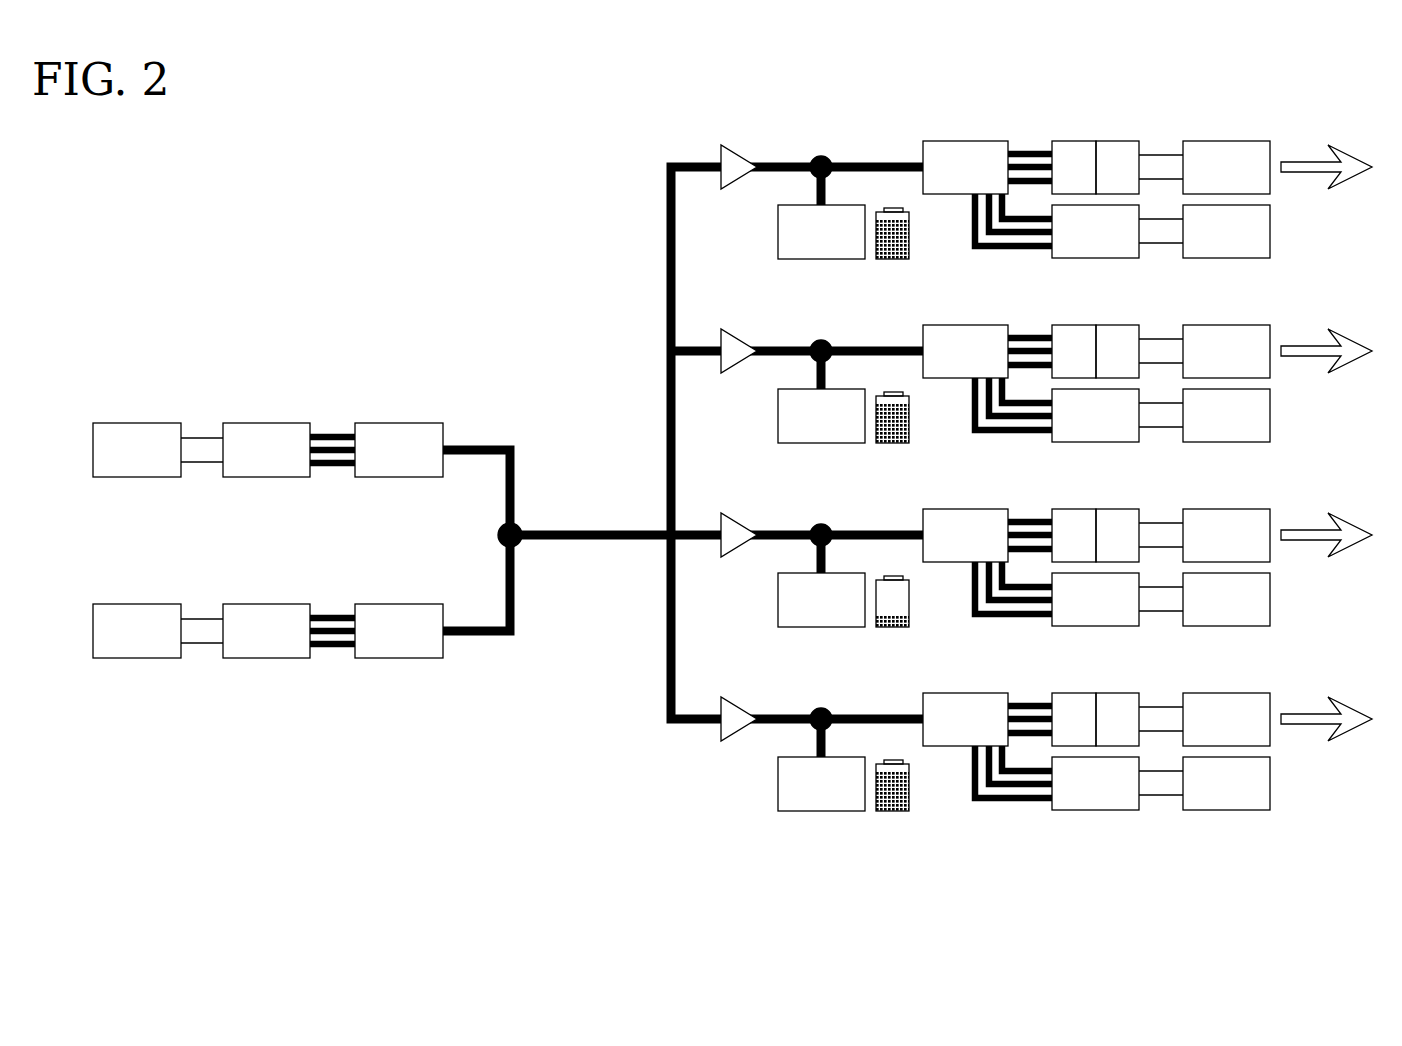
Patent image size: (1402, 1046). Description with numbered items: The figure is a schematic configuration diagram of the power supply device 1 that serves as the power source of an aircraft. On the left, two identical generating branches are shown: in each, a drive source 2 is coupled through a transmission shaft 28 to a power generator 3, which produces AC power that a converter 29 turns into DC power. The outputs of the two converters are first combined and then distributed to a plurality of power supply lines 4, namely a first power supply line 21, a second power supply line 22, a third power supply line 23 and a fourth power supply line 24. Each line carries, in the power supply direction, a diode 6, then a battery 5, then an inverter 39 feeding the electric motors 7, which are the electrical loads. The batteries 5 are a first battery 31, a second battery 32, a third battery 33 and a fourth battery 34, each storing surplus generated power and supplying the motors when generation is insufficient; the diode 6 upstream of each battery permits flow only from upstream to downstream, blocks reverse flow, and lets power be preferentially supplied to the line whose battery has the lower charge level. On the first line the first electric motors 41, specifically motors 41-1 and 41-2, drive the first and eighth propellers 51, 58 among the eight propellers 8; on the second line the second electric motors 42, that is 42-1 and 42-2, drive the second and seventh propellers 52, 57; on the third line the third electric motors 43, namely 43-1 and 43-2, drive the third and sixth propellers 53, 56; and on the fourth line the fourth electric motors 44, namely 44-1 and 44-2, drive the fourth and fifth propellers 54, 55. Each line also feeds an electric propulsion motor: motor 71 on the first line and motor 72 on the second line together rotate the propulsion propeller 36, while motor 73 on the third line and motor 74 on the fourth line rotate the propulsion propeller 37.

The power supply device 1 is at (406, 184).
The drive source 2 is at (137, 423).
The transmission shaft 28 is at (202, 436).
The power generator 3 is at (268, 423).
The converter 29 is at (398, 423).
The power supply line 4 is at (877, 151).
The battery 5 is at (798, 198).
The diode 6 is at (741, 150).
The electric motor 7 is at (1095, 123).
The propeller 8 is at (1264, 123).
The first power supply line 21 is at (694, 162).
The second power supply line 22 is at (694, 346).
The third power supply line 23 is at (694, 530).
The fourth power supply line 24 is at (694, 714).
The first battery 31 is at (820, 262).
The second battery 32 is at (820, 446).
The third battery 33 is at (820, 630).
The fourth battery 34 is at (820, 814).
The propulsion propeller 36 is at (1228, 259).
The propulsion propeller 37 is at (1228, 627).
The inverter 39 is at (963, 140).
The first electric motors 41 is at (1095, 138).
The first electric motor 41-1 is at (1075, 140).
The first electric motor 41-2 is at (1117, 139).
The second electric motors 42 is at (1095, 322).
The second electric motor 42-1 is at (1075, 324).
The second electric motor 42-2 is at (1117, 323).
The third electric motors 43 is at (1095, 506).
The third electric motor 43-1 is at (1075, 508).
The third electric motor 43-2 is at (1117, 507).
The fourth electric motors 44 is at (1095, 690).
The fourth electric motor 44-1 is at (1075, 692).
The fourth electric motor 44-2 is at (1117, 691).
The first propeller 51 is at (1264, 149).
The second propeller 52 is at (1264, 333).
The third propeller 53 is at (1264, 517).
The fourth propeller 54 is at (1264, 701).
The fifth propeller 55 is at (1230, 691).
The sixth propeller 56 is at (1230, 507).
The seventh propeller 57 is at (1230, 323).
The eighth propeller 58 is at (1230, 139).
The electric propulsion motor 71 is at (1097, 259).
The electric propulsion motor 72 is at (1097, 443).
The electric propulsion motor 73 is at (1097, 627).
The electric propulsion motor 74 is at (1097, 811).